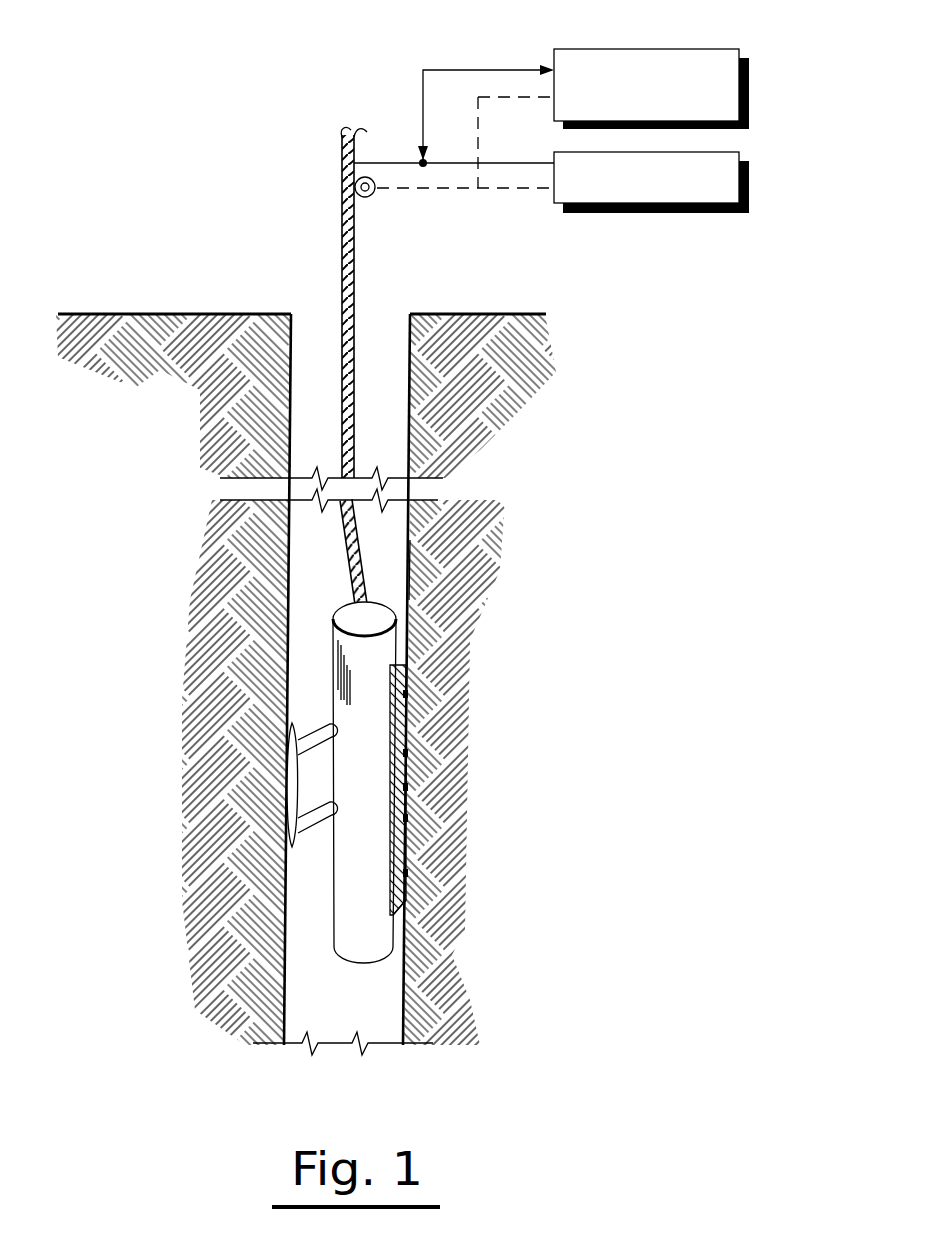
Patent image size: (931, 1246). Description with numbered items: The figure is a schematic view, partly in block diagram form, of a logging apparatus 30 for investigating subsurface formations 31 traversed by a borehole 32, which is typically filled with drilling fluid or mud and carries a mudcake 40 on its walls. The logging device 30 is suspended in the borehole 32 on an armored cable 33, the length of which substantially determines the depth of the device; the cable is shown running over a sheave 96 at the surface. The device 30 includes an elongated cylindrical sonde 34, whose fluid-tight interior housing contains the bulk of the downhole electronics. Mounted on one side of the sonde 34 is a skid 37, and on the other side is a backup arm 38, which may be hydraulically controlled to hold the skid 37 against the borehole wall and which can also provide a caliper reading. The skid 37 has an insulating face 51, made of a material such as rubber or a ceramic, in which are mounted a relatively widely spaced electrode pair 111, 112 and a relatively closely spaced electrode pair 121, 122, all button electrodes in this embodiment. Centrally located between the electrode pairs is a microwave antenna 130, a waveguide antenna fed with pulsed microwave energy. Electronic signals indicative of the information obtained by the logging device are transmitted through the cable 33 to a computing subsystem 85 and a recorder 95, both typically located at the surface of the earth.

The computing subsystem 85 is at (740, 50).
The recorder 95 is at (740, 160).
The sheave / pulley 96 is at (374, 197).
The armored cable 33 is at (342, 252).
The borehole 32 is at (375, 338).
The logging device 30 is at (343, 745).
The mudcake 40 is at (408, 558).
The subsurface formations 31 is at (465, 585).
The skid 37 is at (400, 666).
The electrode 112 is at (408, 693).
The electrode 122 is at (410, 753).
The microwave antenna 130 is at (410, 787).
The electrode 121 is at (410, 818).
The electrode 111 is at (410, 873).
The insulating face 51 is at (410, 915).
The backup arm 38 is at (290, 790).
The sonde 34 is at (340, 893).